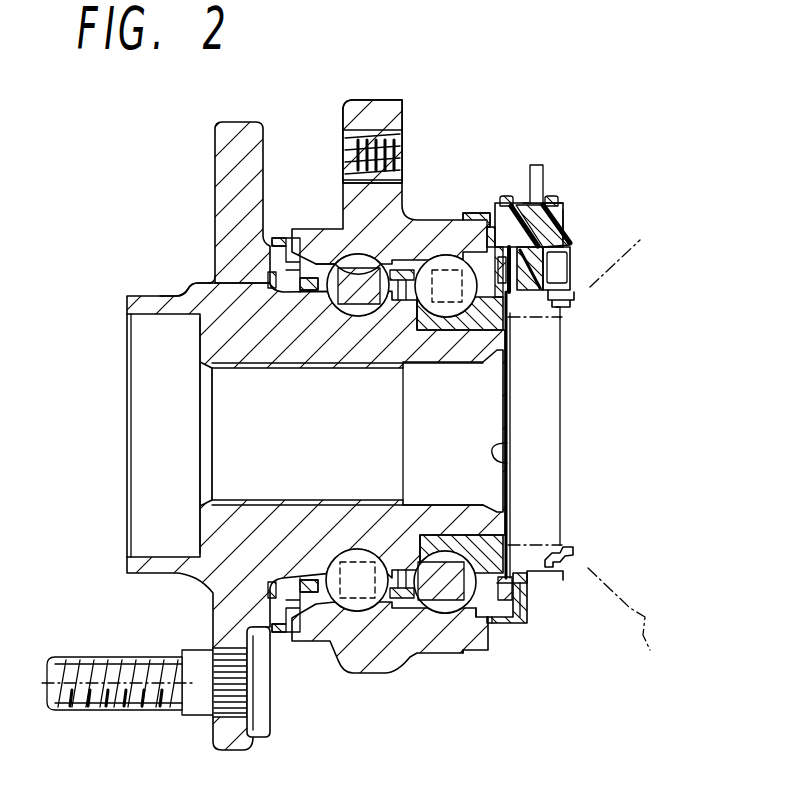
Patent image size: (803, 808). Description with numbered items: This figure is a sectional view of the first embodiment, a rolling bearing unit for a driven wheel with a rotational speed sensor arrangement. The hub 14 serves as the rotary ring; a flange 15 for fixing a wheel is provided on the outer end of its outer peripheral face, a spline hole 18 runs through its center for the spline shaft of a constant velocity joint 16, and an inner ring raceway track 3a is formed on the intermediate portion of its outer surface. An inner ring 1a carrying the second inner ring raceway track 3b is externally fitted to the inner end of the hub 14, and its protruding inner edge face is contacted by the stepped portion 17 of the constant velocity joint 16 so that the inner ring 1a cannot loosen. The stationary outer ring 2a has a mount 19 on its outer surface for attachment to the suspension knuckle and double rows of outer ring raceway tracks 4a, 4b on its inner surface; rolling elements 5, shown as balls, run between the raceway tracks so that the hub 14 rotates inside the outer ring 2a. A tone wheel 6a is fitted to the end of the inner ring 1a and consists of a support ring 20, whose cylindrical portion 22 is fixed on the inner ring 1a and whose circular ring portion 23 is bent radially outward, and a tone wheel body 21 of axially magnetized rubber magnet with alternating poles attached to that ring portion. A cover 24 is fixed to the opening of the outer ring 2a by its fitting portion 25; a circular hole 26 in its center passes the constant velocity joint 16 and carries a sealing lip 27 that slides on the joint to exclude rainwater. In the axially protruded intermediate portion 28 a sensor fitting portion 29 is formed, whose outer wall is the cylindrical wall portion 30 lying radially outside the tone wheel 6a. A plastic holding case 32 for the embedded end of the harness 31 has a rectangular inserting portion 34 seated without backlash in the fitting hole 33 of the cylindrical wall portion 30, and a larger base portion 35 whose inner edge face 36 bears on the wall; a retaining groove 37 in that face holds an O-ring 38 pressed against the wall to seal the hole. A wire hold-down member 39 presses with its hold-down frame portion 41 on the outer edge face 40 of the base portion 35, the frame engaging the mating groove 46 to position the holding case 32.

The inner ring 1a is at (514, 402).
The outer ring 2a is at (310, 642).
The inner ring raceway track 3a is at (302, 242).
The inner ring raceway track 3b is at (452, 320).
The outer ring raceway track 4a is at (325, 245).
The outer ring raceway track 4b is at (402, 258).
The rolling elements 5 is at (352, 262).
The tone wheel 6a is at (440, 217).
The hub 14 is at (190, 286).
The flange 15 is at (228, 168).
The constant velocity joint 16 is at (628, 622).
The stepped portion 17 is at (506, 452).
The spline hole 18 is at (215, 385).
The mount 19 is at (360, 100).
The support ring 20 is at (520, 292).
The tone wheel body 21 is at (566, 308).
The cylindrical portion 22 is at (496, 626).
The circular ring portion 23 is at (510, 623).
The cover 24 is at (528, 597).
The fitting portion 25 is at (475, 646).
The circular hole 26 is at (568, 558).
The sealing lip 27 is at (558, 316).
The intermediate portion 28 is at (526, 608).
The sensor fitting portion 29 is at (548, 302).
The cylindrical wall portion 30 is at (571, 278).
The harness 31 is at (546, 205).
The holding case 32 is at (542, 232).
The fitting hole 33 is at (566, 246).
The inserting portion 34 is at (561, 365).
The base portion 35 is at (560, 210).
The inner edge face 36 is at (553, 197).
The retaining groove 37 is at (478, 214).
The O-ring 38 is at (571, 262).
The hold-down member 39 is at (564, 234).
The outer edge face 40 is at (537, 165).
The hold-down frame portion 41 is at (565, 224).
The mating groove 46 is at (506, 196).